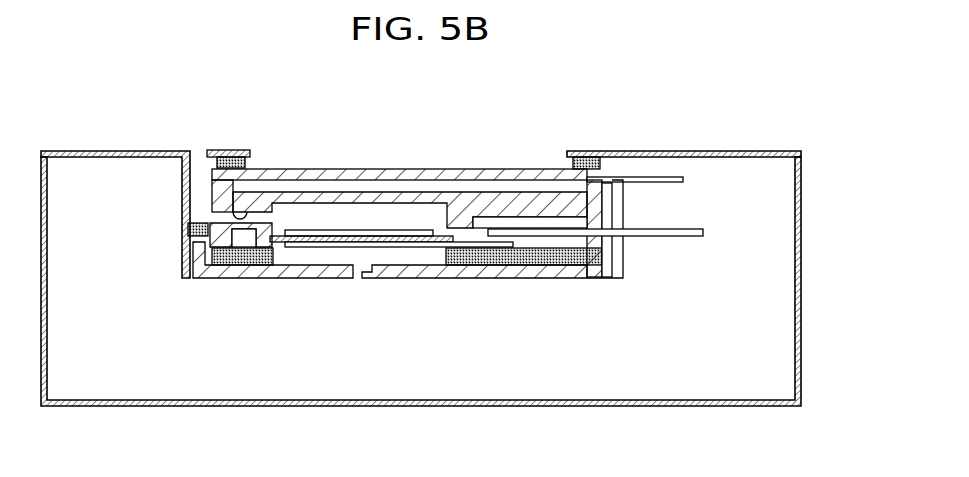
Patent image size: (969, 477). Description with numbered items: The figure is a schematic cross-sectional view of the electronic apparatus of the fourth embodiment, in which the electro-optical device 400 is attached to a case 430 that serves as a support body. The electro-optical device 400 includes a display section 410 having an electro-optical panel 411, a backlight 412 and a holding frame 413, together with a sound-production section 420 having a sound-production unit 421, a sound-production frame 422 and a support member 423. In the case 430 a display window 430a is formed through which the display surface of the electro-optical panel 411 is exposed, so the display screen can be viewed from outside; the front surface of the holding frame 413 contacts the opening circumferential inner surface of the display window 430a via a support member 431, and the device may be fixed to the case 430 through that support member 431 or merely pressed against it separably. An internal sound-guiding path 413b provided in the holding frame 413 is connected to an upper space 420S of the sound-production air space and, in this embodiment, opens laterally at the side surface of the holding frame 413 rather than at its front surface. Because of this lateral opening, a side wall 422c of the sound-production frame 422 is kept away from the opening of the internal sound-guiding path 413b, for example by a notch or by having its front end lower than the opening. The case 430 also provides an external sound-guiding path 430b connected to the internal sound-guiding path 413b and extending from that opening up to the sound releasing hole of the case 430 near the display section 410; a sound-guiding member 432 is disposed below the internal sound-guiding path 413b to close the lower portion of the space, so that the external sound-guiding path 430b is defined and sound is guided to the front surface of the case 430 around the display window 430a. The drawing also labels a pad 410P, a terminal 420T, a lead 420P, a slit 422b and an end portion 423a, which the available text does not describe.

The electro-optical device 400 is at (495, 81).
The display section 410 is at (450, 186).
The pad of first package 410P is at (672, 175).
The electro-optical panel 411 is at (347, 168).
The backlight 412 is at (386, 191).
The holding frame 413 is at (208, 179).
The internal sound-guiding path 413b is at (242, 207).
The sound-production section 420 is at (445, 242).
The upper space 420S is at (416, 222).
The terminal of second package 420T is at (280, 279).
The lead of second package 420P is at (703, 237).
The sound-production unit 421 is at (395, 248).
The sound-production frame 422 is at (212, 280).
The slit of frame member 422b is at (361, 272).
The side wall 422c is at (185, 243).
The support member 423 is at (603, 280).
The end portion of second frame member 423a is at (444, 279).
The case 430 is at (173, 407).
The display window 430a is at (565, 155).
The external sound-guiding path 430b is at (185, 160).
The support member 431 is at (603, 163).
The sound-guiding member 432 is at (199, 223).